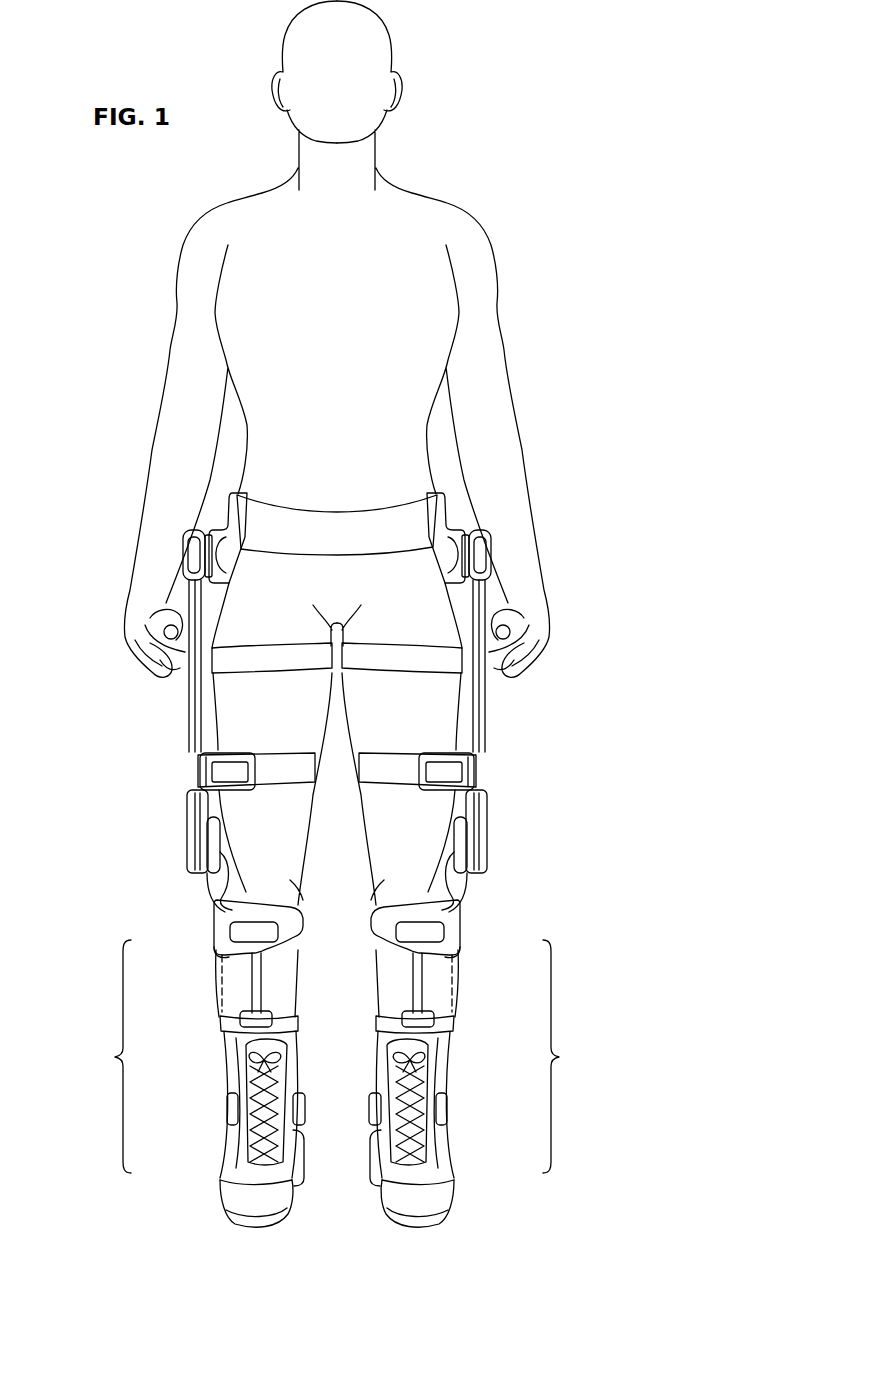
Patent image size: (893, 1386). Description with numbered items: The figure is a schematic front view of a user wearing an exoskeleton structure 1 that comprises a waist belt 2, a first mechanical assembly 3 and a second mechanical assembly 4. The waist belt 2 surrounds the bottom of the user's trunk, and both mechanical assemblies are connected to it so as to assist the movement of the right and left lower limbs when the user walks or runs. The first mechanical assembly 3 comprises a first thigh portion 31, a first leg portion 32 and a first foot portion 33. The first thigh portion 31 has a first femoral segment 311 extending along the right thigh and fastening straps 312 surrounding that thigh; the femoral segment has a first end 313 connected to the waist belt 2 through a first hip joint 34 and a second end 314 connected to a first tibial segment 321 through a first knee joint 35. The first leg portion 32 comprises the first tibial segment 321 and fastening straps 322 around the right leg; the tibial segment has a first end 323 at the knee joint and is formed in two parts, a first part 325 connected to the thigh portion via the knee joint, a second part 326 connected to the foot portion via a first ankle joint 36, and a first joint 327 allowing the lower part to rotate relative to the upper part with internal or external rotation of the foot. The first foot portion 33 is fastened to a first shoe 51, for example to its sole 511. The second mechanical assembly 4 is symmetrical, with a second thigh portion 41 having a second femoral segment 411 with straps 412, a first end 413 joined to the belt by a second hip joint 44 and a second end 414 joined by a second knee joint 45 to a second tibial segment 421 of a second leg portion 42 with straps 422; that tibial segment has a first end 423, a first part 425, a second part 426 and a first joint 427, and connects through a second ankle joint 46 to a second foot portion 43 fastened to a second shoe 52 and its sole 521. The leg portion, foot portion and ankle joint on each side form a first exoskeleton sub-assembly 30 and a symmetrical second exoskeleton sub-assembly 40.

The exoskeleton structure 1 is at (68, 712).
The waist belt 2 is at (383, 527).
The first mechanical assembly 3 is at (178, 700).
The second mechanical assembly 4 is at (496, 700).
The first exoskeleton sub-assembly 30 is at (226, 1065).
The second exoskeleton sub-assembly 40 is at (449, 1073).
The first thigh portion 31 is at (200, 765).
The second thigh portion 41 is at (474, 765).
The first femoral segment 311 is at (193, 650).
The second femoral segment 411 is at (481, 650).
The fastening straps 312 is at (257, 660).
The fastening straps 412 is at (417, 660).
The first end 313 is at (192, 566).
The first end 413 is at (482, 566).
The second end 314 is at (192, 833).
The second end 414 is at (482, 833).
The first hip joint 34 is at (197, 558).
The second hip joint 44 is at (477, 558).
The first knee joint 35 is at (188, 828).
The second knee joint 45 is at (486, 828).
The first leg portion 32 is at (223, 975).
The second leg portion 42 is at (451, 975).
The first tibial segment 321 is at (228, 997).
The second tibial segment 421 is at (446, 997).
The fastening straps 322 is at (300, 915).
The fastening straps 422 is at (377, 918).
The first end 323 is at (218, 845).
The first end 423 is at (456, 845).
The first part 325 is at (226, 953).
The first part 425 is at (448, 953).
The second part 326 is at (234, 1032).
The second part 426 is at (440, 1032).
The first joint 327 is at (258, 1023).
The first joint 427 is at (416, 1026).
The first foot portion 33 is at (227, 1151).
The second foot portion 43 is at (447, 1151).
The first ankle joint 36 is at (221, 1112).
The second ankle joint 46 is at (453, 1112).
The first shoe 51 is at (246, 1192).
The second shoe 52 is at (428, 1192).
The sole 511 is at (236, 1219).
The sole 521 is at (438, 1219).